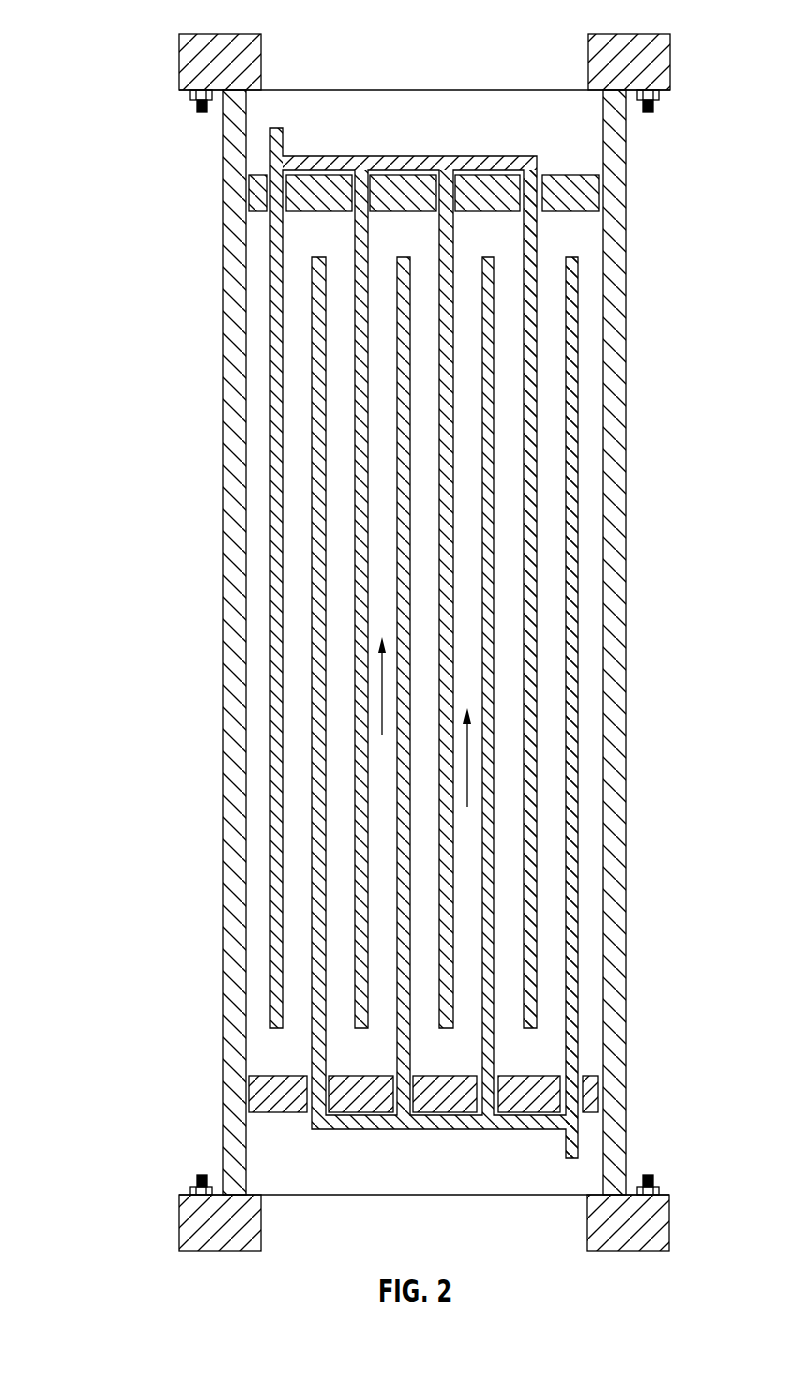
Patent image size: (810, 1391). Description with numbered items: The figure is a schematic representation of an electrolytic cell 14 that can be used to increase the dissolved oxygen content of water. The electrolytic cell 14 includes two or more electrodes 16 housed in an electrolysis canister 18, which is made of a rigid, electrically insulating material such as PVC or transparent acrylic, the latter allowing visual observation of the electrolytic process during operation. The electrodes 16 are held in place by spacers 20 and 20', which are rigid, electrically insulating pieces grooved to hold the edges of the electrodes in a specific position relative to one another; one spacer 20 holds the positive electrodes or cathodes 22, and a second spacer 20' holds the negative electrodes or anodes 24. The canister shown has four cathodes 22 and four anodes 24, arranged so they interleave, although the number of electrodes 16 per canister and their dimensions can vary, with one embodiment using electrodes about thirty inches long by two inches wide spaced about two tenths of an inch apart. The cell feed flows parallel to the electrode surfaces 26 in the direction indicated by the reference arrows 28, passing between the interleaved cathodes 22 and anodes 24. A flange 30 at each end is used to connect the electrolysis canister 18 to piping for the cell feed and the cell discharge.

The electrolytic cell 14 is at (111, 17).
The electrodes 16 is at (537, 910).
The electrolysis canister 18 is at (625, 402).
The spacer 20 is at (462, 1083).
The second spacer 20' is at (472, 179).
The cathodes 22 is at (397, 940).
The anodes 24 is at (355, 443).
The electrode surfaces 26 is at (368, 517).
The reference arrows 28 is at (382, 685).
The flange 30 is at (199, 34).